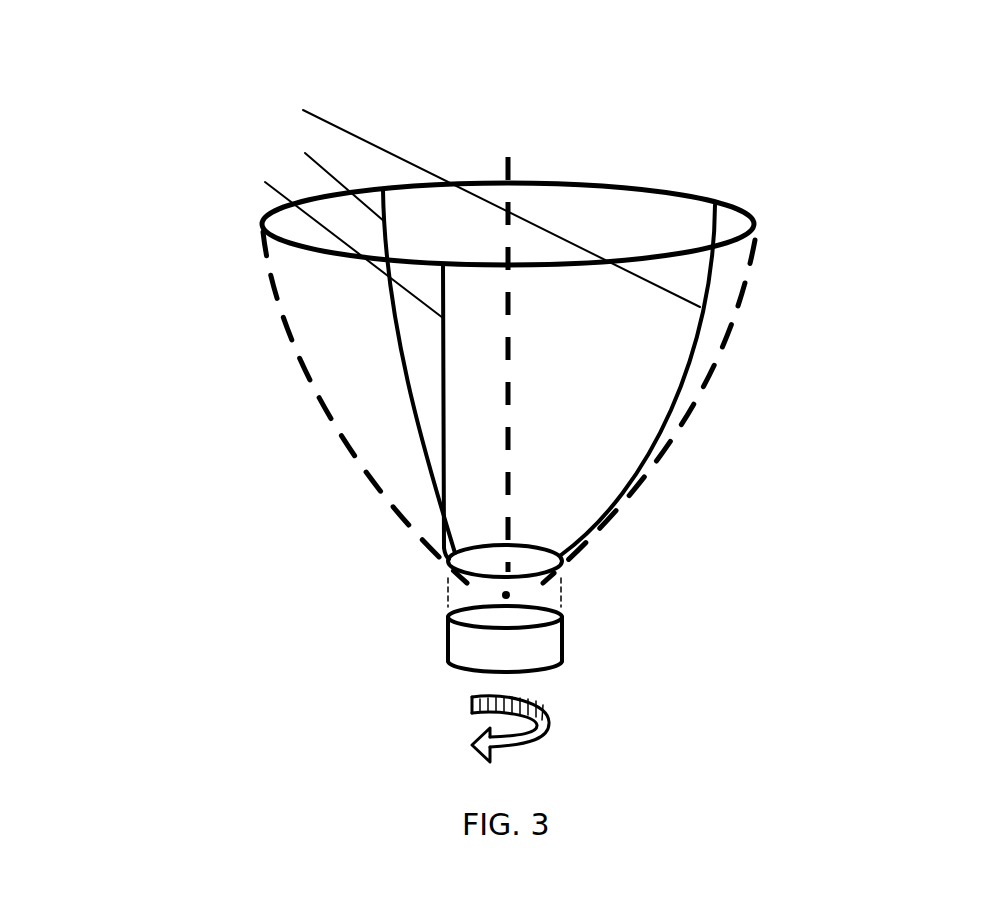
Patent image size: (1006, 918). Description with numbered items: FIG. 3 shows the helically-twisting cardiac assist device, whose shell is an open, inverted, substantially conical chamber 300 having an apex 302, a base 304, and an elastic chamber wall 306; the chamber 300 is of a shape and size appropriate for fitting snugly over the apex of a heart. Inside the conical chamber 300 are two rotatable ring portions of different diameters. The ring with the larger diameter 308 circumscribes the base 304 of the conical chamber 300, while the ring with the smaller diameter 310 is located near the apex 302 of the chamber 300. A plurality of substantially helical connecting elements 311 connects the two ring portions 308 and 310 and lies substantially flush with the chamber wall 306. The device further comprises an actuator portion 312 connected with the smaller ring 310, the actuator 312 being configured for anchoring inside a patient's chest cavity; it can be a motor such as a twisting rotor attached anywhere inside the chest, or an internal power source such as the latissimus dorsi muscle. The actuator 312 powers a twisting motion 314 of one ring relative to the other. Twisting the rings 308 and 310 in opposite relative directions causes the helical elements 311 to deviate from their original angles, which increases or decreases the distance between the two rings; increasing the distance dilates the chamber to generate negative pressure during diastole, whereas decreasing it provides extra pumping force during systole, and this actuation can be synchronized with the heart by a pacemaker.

The conical chamber 300 is at (330, 335).
The apex 302 is at (506, 595).
The base 304 is at (643, 222).
The elastic chamber wall 306 is at (335, 425).
The ring with the larger diameter 308 is at (750, 208).
The ring with the smaller diameter 310 is at (548, 580).
The helical connecting elements 311 is at (305, 153).
The actuator portion 312 is at (450, 663).
The twisting motion 314 is at (547, 732).